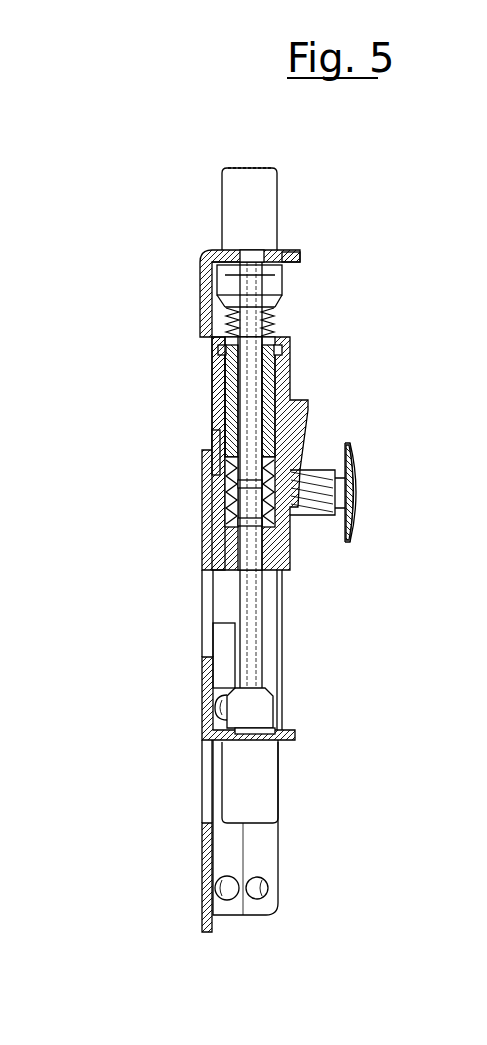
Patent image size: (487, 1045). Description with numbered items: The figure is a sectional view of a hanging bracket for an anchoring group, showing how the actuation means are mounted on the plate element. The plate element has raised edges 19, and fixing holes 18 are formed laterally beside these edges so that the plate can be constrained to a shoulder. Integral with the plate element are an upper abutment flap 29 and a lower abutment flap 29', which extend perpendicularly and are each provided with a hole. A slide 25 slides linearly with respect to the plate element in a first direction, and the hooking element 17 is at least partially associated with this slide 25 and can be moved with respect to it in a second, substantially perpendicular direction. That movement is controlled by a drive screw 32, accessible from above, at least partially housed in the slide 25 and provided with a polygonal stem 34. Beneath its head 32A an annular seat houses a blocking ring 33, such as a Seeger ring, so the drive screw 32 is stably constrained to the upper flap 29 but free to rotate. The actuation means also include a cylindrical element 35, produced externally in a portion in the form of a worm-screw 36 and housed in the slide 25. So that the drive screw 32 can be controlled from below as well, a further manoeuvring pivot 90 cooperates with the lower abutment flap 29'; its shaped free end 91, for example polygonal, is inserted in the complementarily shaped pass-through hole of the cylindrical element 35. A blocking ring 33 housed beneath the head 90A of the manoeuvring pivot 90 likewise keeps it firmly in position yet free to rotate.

The drive screw 32 is at (254, 165).
The head 32A is at (235, 205).
The upper abutment flap 29 is at (320, 268).
The blocking ring 33 is at (290, 268).
The polygonal stem 34 is at (252, 375).
The cylindrical element 35 is at (217, 383).
The worm-screw 36 is at (217, 485).
The shaped free end 91 is at (238, 514).
The manoeuvring pivot 90 is at (233, 607).
The slide 25 is at (295, 412).
The hooking element 17 is at (350, 540).
The lower abutment flap 29' is at (322, 725).
The head 90A is at (235, 783).
The raised edges 19 is at (272, 863).
The fixing holes 18 is at (257, 893).